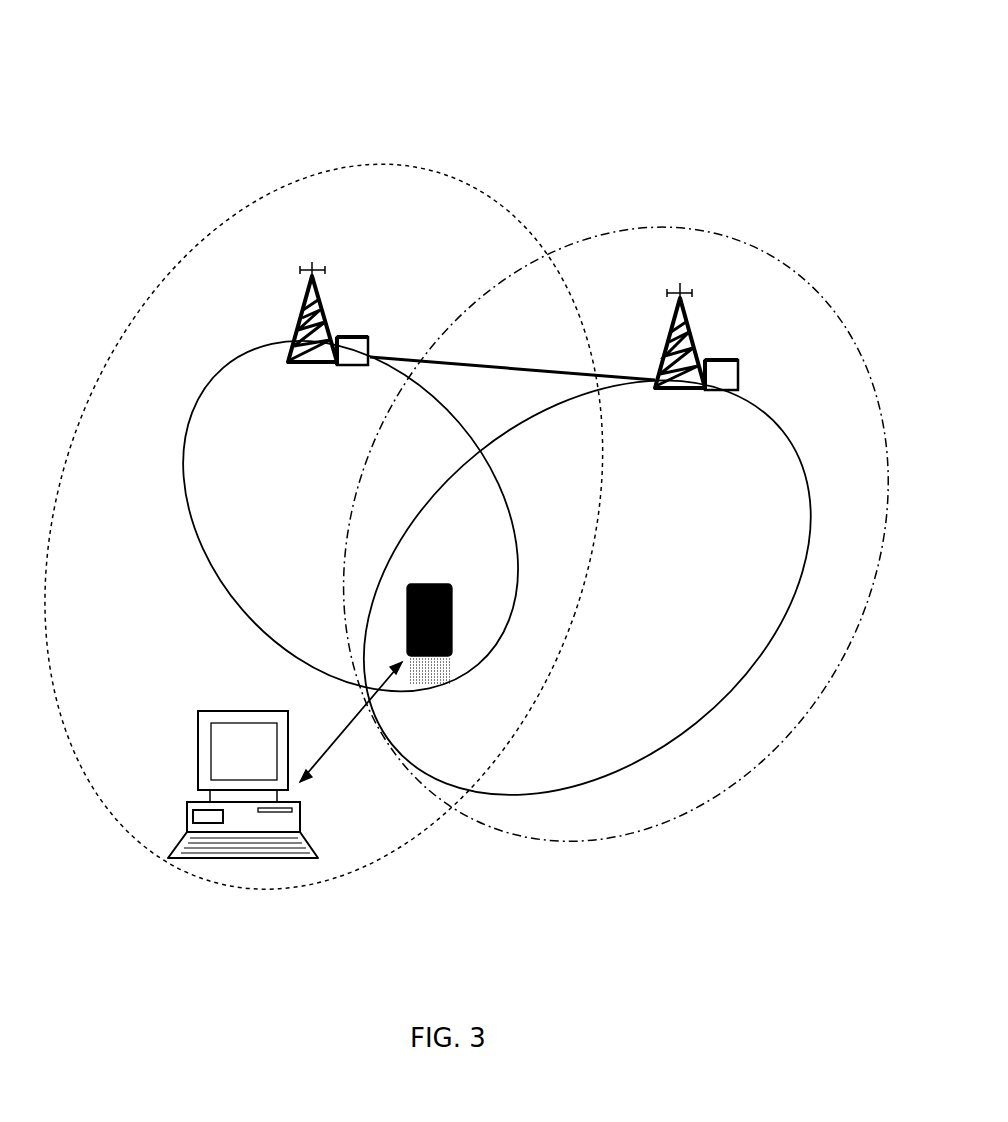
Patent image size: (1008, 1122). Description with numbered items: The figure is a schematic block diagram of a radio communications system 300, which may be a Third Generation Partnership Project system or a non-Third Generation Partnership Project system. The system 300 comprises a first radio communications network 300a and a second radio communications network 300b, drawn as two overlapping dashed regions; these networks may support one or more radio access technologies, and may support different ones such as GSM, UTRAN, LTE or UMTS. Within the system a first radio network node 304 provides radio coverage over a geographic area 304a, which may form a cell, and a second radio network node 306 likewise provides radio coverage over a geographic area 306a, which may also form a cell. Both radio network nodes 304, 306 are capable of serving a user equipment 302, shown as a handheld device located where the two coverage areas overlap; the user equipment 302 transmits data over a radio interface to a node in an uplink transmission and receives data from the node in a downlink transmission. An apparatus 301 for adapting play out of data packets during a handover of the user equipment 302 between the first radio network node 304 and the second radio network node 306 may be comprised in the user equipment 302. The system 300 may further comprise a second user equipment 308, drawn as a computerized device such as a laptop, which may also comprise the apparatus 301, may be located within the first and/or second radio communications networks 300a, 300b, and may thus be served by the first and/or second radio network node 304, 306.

The radio communications system 300 is at (504, 118).
The first radio communications network 300a is at (233, 178).
The second radio communications network 300b is at (823, 288).
The apparatus 301 is at (452, 637).
The user equipment 302 is at (430, 584).
The first radio network node 304 is at (318, 294).
The geographic area 304a is at (213, 374).
The second radio network node 306 is at (663, 306).
The geographic area 306a is at (790, 444).
The second user equipment 308 is at (295, 803).